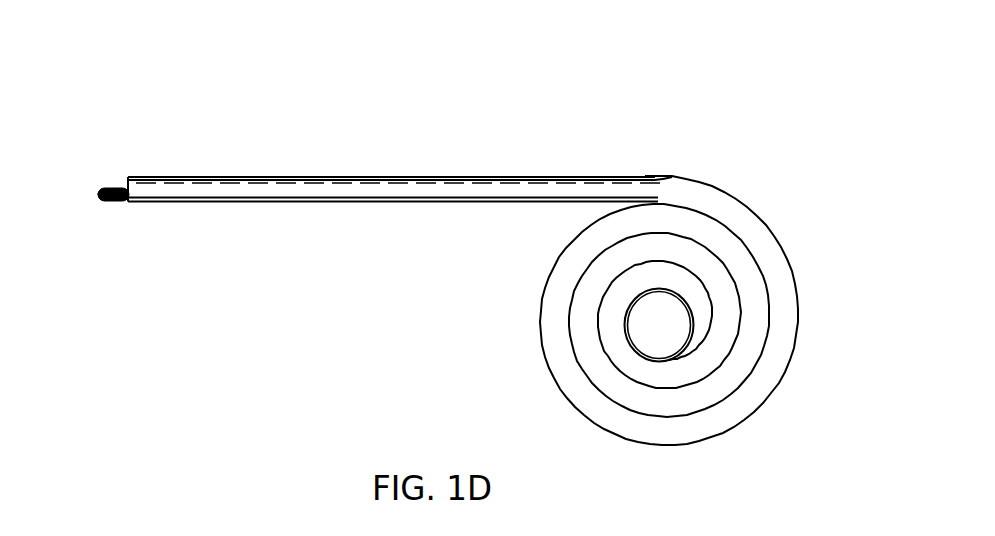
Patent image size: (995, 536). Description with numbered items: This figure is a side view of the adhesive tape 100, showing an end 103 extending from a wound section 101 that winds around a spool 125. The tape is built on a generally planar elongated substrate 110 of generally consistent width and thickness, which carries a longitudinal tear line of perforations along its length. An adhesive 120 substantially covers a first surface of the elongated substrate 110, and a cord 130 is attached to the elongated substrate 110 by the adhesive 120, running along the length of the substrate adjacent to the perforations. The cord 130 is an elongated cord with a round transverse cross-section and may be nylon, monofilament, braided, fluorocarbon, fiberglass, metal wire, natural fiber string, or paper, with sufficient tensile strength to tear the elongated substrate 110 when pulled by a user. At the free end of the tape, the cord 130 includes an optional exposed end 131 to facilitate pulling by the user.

The adhesive tape 100 is at (155, 98).
The wound section 101 is at (778, 270).
The end 103 is at (425, 187).
The elongated substrate 110 is at (340, 190).
The adhesive 120 is at (340, 200).
The spool 125 is at (681, 334).
The cord 130 is at (97, 197).
The exposed end 131 is at (112, 188).